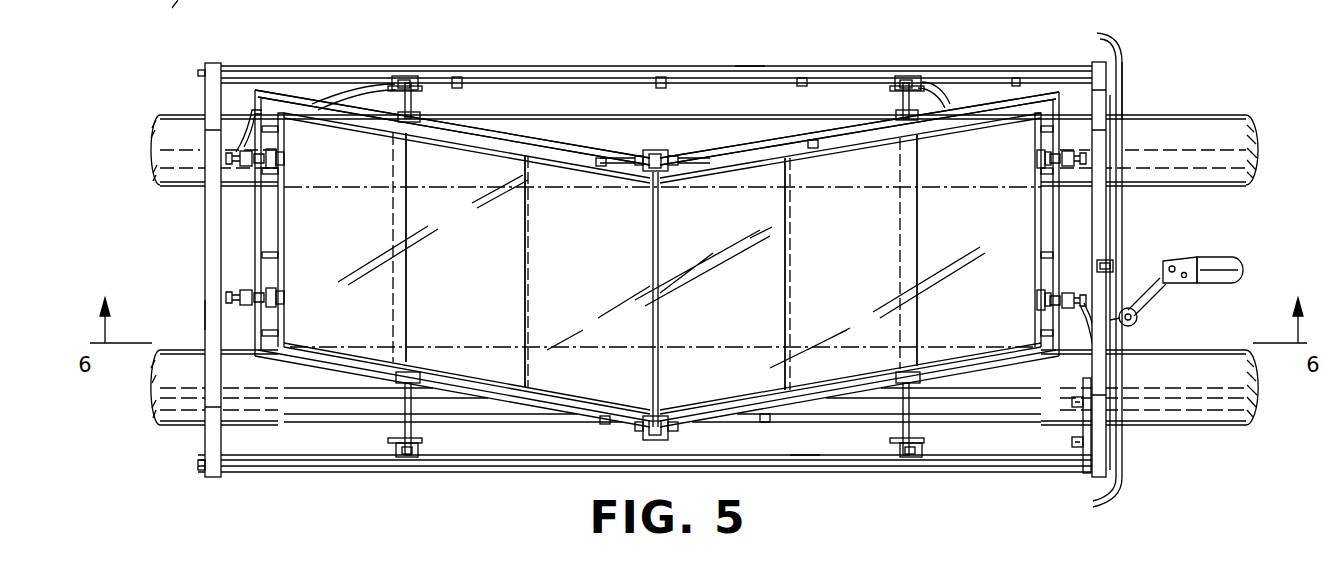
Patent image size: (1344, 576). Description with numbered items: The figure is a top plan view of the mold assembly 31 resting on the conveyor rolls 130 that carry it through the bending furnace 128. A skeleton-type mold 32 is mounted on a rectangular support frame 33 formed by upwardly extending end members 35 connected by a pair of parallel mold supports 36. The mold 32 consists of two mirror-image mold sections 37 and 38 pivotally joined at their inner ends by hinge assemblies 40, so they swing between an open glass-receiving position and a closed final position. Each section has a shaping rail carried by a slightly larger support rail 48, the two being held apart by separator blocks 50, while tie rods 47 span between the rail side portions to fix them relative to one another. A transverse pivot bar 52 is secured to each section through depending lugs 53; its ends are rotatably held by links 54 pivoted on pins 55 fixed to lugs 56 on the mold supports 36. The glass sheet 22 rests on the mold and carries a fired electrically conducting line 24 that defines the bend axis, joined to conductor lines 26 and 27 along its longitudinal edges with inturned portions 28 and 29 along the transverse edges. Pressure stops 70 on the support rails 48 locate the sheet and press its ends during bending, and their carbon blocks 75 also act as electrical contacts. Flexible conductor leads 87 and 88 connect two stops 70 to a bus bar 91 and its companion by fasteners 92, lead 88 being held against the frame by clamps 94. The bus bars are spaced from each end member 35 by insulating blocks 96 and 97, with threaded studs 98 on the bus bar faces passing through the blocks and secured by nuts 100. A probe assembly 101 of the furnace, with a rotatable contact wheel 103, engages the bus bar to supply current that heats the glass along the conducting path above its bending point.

The glass sheet 22 is at (540, 410).
The fired electrically conducting line 24 is at (652, 250).
The conductor line 26 is at (447, 180).
The conductor line 27 is at (853, 370).
The inturned portion 28 is at (282, 140).
The inturned portion 29 is at (1030, 318).
The mold assembly 31 is at (200, 80).
The skeleton-type mold 32 is at (732, 452).
The support frame 33 is at (562, 65).
The end member 35 is at (210, 312).
The mold support 36 is at (743, 66).
The mold section 37 is at (852, 120).
The mold section 38 is at (308, 97).
The hinge assembly 40 is at (640, 145).
The tie rod 47 is at (530, 290).
The support rail 48 is at (478, 138).
The separator block 50 is at (275, 258).
The pivot bar 52 is at (420, 420).
The lug 53 is at (415, 112).
The link 54 is at (412, 84).
The pin 55 is at (382, 84).
The lug 56 is at (392, 75).
The pressure stop 70 is at (238, 162).
The carbon block 75 is at (285, 160).
The flexible conductor lead 87 is at (1062, 380).
The flexible conductor lead 88 is at (803, 78).
The bus bar 91 is at (1122, 88).
The fastener 92 is at (1113, 265).
The clamp 94 is at (462, 78).
The insulating block 96 is at (1088, 70).
The insulating block 97 is at (1112, 158).
The threaded stud 98 is at (1105, 60).
The nut 100 is at (1072, 432).
The probe assembly 101 is at (1226, 250).
The contact wheel 103 is at (1140, 318).
The bending furnace 128 is at (154, 13).
The conveyor roll 130 is at (1232, 128).